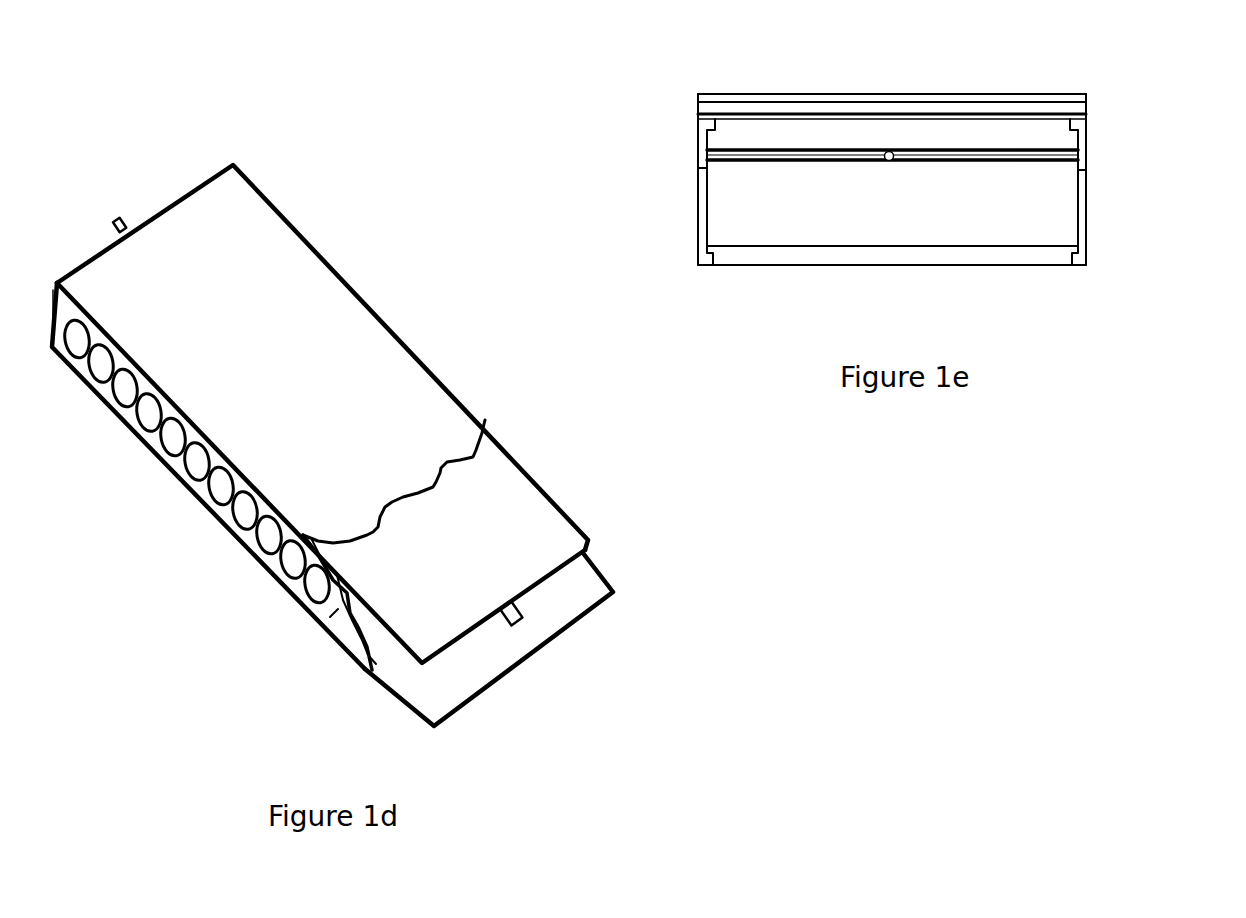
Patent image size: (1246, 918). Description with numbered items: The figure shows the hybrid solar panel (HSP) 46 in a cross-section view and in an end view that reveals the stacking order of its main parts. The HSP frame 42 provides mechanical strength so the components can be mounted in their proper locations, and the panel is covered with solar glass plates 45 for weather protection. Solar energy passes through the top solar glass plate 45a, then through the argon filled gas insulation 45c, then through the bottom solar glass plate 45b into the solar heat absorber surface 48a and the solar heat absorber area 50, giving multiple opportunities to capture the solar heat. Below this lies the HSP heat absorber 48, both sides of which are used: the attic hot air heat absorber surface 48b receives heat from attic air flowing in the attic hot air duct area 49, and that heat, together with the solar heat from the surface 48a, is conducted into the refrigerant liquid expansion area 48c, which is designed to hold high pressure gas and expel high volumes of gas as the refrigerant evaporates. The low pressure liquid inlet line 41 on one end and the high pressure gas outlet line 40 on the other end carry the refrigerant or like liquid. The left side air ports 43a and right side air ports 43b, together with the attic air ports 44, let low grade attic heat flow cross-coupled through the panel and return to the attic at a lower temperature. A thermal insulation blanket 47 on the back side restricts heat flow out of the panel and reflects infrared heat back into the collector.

In FIG. 1D, the outlet high pressure gas line 40 is at (120, 207).
In FIG. 1D, the inlet low pressure liquid line 41 is at (520, 624).
In FIG. 1E, the inlet low pressure liquid line 41 is at (893, 160).
In FIG. 1D, the hybrid solar panel frame 42 is at (322, 630).
In FIG. 1E, the left side air ports 43a is at (702, 210).
In FIG. 1E, the right side air ports 43b is at (1085, 198).
In FIG. 1D, the attic air ports 44 is at (208, 510).
In FIG. 1D, the solar glass plates 45 is at (372, 422).
In FIG. 1E, the top solar glass plate 45a is at (695, 97).
In FIG. 1E, the bottom solar glass plate 45b is at (695, 117).
In FIG. 1E, the argon filled gas insulation 45c is at (1080, 102).
In FIG. 1D, the hybrid solar panel (HSP) 46 is at (323, 253).
In FIG. 1D, the thermal insulation blanket 47 is at (463, 708).
In FIG. 1E, the thermal insulation blanket 47 is at (742, 263).
In FIG. 1D, the HSP heat absorber 48 is at (432, 580).
In FIG. 1E, the solar heat absorber surface 48a is at (912, 147).
In FIG. 1E, the attic hot air heat absorber surface 48b is at (980, 168).
In FIG. 1E, the R-410a liquid expansion area 48c is at (1080, 156).
In FIG. 1E, the attic hot air duct area 49 is at (820, 197).
In FIG. 1E, the solar heat absorber area 50 is at (800, 138).